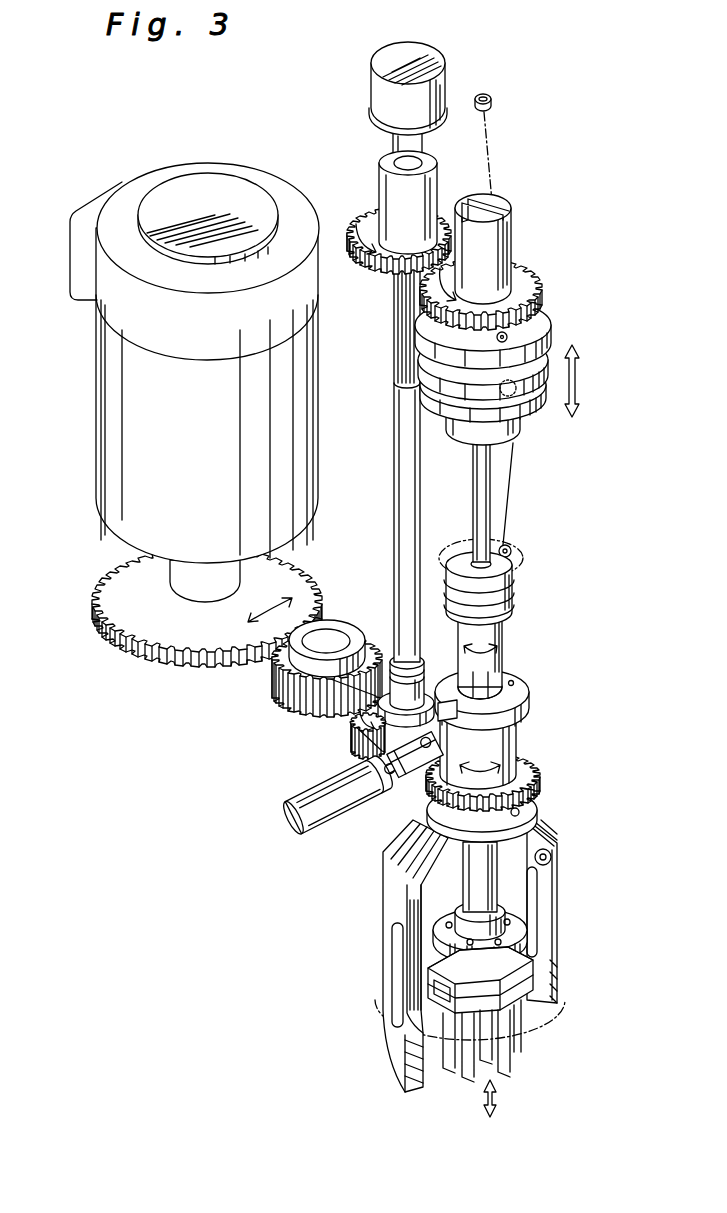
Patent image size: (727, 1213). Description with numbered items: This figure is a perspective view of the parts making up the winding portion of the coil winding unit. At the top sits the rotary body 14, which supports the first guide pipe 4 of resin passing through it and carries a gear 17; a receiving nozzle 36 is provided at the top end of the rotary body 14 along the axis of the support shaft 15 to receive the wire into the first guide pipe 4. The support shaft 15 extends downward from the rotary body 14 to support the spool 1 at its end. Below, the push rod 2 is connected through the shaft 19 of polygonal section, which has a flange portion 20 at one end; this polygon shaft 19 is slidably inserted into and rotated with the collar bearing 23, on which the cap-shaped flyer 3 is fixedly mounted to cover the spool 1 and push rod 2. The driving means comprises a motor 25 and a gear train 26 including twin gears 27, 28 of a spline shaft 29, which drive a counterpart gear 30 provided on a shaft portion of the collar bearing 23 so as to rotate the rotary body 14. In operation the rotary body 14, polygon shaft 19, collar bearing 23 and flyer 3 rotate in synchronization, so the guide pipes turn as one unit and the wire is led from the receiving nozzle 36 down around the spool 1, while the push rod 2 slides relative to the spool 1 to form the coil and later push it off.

The spool 1 is at (515, 1040).
The push rod 2 is at (442, 955).
The flyer 3 is at (383, 1053).
The first guide pipe 4 is at (516, 447).
The rotary body 14 is at (545, 327).
The support shaft 15 is at (483, 526).
The gear 17 is at (538, 273).
The shaft of polygonal section 19 is at (497, 632).
The flange portion 20 is at (515, 590).
The collar bearing 23 is at (445, 813).
The motor 25 is at (108, 476).
The gear train 26 is at (273, 681).
The twin gear 27 is at (352, 740).
The twin gear 28 is at (381, 258).
The spline shaft 29 is at (402, 494).
The counterpart gear 30 is at (528, 778).
The receiving nozzle 36 is at (491, 113).